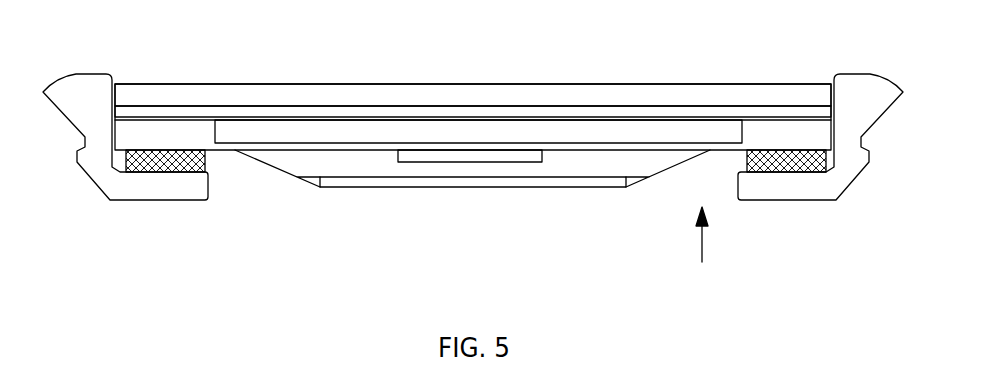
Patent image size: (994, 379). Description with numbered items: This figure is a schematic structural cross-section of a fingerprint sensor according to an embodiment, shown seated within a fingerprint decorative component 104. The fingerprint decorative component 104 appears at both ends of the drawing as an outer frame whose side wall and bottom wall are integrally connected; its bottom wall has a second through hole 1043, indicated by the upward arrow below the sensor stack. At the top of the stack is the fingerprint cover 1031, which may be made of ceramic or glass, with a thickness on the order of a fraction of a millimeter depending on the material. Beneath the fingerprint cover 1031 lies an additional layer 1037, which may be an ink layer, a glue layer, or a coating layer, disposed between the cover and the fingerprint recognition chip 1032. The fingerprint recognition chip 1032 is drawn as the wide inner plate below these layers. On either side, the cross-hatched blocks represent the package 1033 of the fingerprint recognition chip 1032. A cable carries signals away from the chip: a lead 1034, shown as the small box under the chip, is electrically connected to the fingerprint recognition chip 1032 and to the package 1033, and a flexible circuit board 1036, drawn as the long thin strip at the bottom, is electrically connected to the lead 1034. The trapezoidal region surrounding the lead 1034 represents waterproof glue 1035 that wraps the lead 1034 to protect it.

The fingerprint decorative component 104 is at (870, 98).
The fingerprint cover 1031 is at (793, 98).
The additional layer 1037 is at (702, 115).
The fingerprint recognition chip 1032 is at (273, 133).
The package of the fingerprint recognition chip 1033 is at (150, 140).
The lead 1034 is at (490, 153).
The waterproof glue 1035 is at (657, 162).
The flexible circuit board 1036 is at (400, 182).
The second through hole 1043 is at (697, 253).